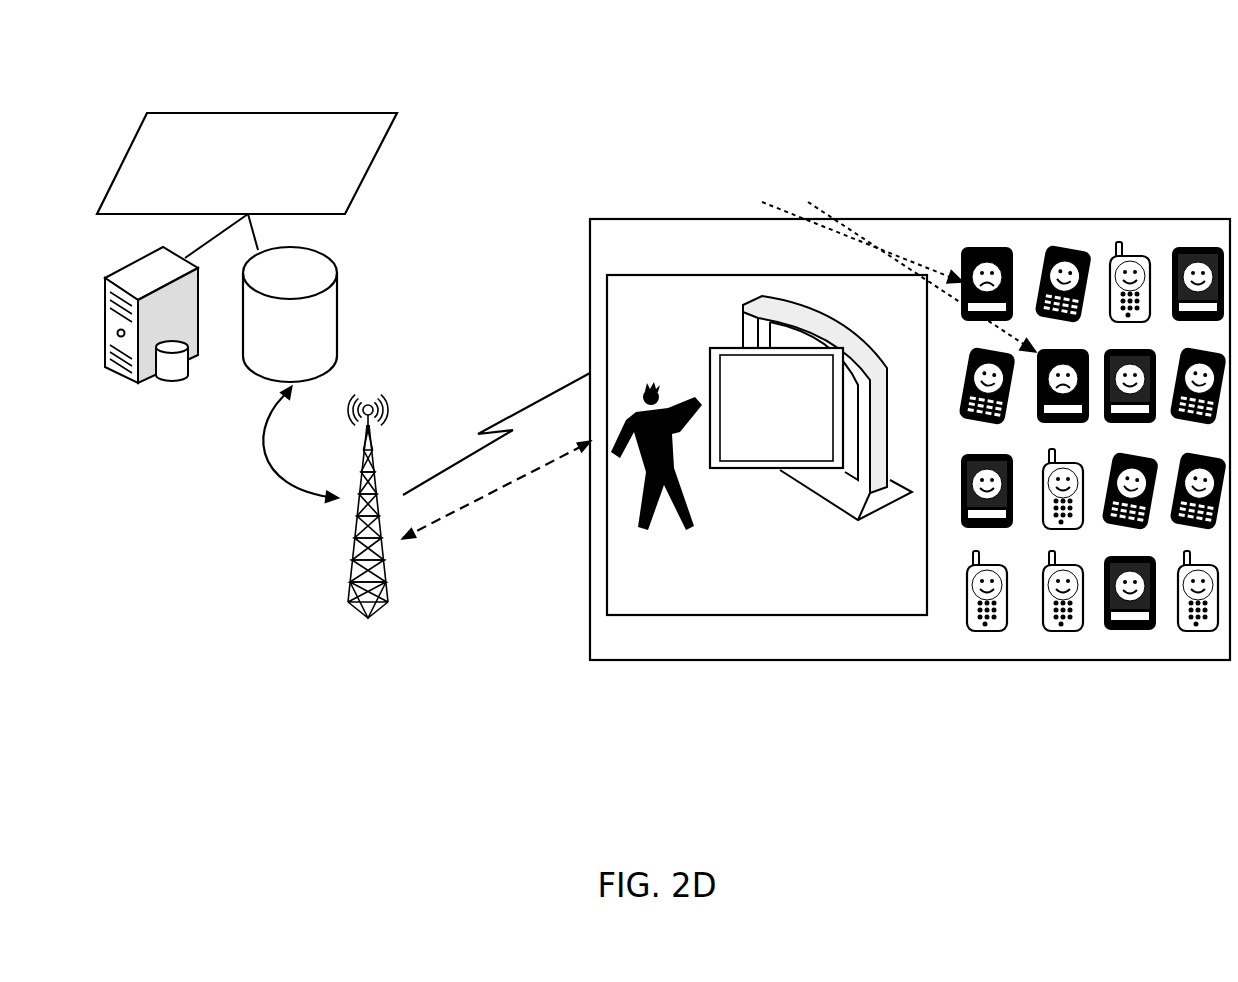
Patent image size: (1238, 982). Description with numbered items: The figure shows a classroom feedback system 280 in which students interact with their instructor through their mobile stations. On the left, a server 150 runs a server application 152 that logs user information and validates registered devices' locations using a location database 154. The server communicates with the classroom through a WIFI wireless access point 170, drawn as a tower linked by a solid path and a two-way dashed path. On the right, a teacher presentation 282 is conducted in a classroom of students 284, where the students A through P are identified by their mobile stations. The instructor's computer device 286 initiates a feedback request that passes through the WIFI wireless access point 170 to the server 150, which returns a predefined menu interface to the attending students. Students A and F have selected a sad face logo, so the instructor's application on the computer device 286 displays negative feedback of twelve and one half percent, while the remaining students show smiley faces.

The classroom feedback system 280 is at (70, 46).
The server application 152 is at (247, 163).
The server 150 is at (151, 345).
The location database 154 is at (352, 314).
The WIFI wireless access point 170 is at (372, 589).
The teacher presentation 282 is at (767, 445).
The classroom of students 284 is at (910, 476).
The computer device 286 is at (827, 331).